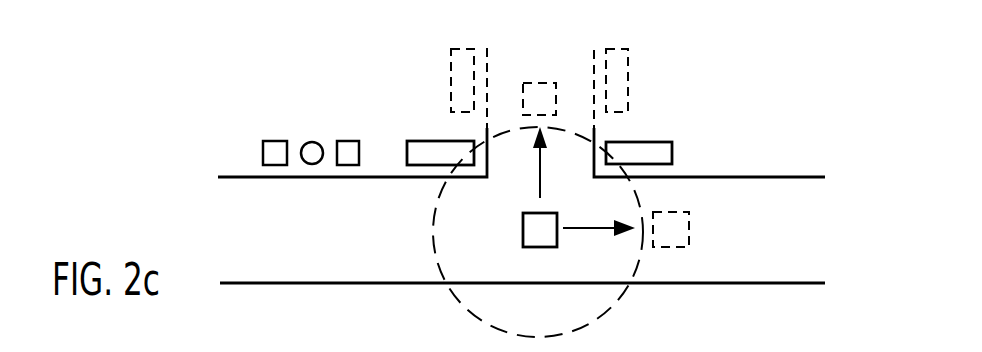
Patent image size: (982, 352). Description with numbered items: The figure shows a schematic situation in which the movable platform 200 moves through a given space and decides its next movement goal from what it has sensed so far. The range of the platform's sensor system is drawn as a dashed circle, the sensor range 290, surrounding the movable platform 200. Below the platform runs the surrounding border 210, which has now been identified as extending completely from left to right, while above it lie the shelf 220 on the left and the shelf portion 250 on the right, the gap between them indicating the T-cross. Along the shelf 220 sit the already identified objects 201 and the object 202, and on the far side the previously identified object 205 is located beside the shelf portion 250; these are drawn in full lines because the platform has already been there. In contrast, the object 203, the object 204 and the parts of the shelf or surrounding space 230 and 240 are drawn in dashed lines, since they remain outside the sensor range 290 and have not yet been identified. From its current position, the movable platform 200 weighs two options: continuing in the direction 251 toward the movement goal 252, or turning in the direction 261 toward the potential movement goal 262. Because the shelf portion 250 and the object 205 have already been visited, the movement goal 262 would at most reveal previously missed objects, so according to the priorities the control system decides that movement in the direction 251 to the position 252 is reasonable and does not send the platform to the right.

The movable platform 200 is at (540, 247).
The objects 201 is at (275, 141).
The object 202 is at (420, 147).
The object 203 is at (457, 65).
The object 204 is at (624, 65).
The object 205 is at (658, 145).
The surrounding border 210 is at (292, 285).
The shelf 220 is at (240, 178).
The part of the shelf / surrounding space 230 is at (487, 55).
The part of the shelf / surrounding space 240 is at (594, 58).
The shelf portion 250 is at (783, 178).
The movement direction 251 is at (538, 177).
The movement goal 252 is at (557, 112).
The movement direction 261 is at (593, 228).
The potential movement goal 262 is at (689, 228).
The sensor range 290 is at (603, 317).